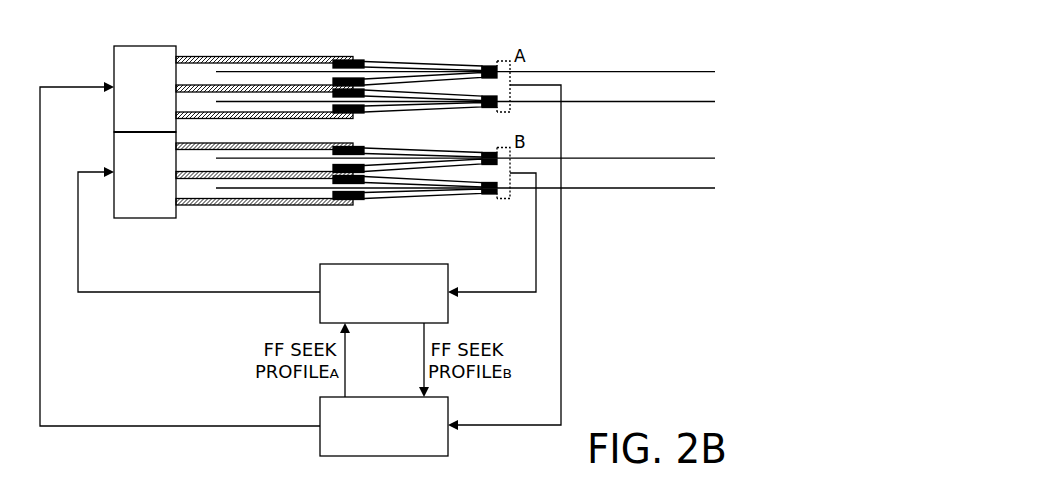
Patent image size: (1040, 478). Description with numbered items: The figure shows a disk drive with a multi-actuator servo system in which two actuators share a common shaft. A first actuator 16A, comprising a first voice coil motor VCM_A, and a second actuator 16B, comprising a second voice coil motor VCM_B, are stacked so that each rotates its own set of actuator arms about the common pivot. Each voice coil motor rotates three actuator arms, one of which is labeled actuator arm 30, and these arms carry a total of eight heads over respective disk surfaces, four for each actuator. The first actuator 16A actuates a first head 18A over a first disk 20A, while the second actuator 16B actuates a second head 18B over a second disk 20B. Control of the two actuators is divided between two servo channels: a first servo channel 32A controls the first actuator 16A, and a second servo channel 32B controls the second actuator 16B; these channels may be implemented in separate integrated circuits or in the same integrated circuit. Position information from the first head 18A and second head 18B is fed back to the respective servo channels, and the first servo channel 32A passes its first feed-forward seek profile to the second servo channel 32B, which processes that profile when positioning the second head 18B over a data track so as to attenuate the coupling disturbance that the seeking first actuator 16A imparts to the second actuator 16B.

The first actuator 16A is at (114, 50).
The second actuator 16B is at (114, 140).
The actuator arm 30 is at (250, 56).
The first head 18A is at (483, 59).
The second head 18B is at (483, 146).
The first disk 20A is at (712, 64).
The second disk 20B is at (709, 151).
The first servo channel 32A is at (320, 404).
The second servo channel 32B is at (320, 268).